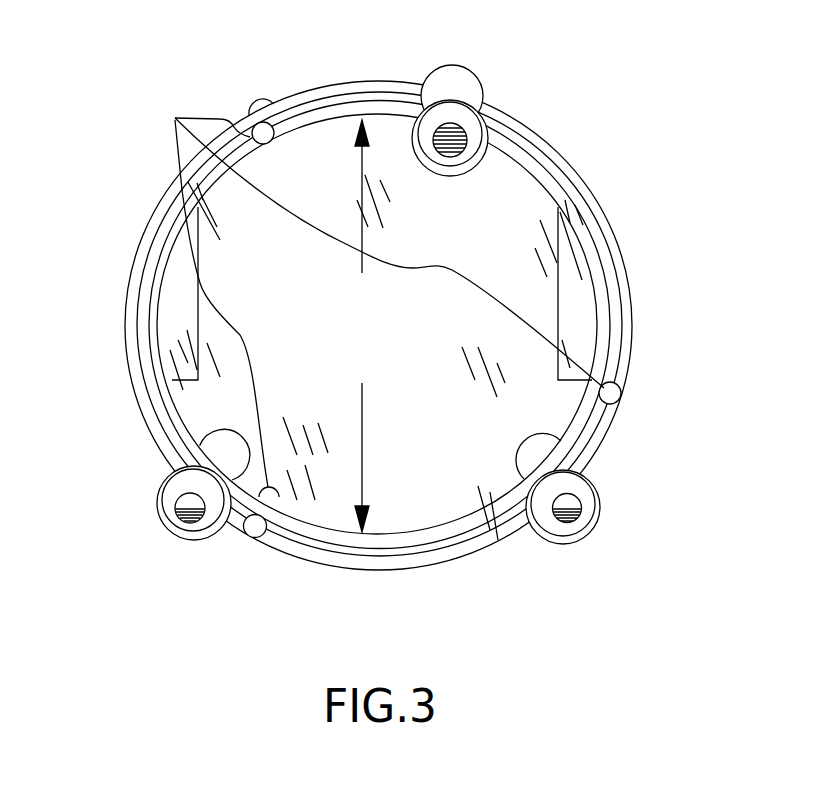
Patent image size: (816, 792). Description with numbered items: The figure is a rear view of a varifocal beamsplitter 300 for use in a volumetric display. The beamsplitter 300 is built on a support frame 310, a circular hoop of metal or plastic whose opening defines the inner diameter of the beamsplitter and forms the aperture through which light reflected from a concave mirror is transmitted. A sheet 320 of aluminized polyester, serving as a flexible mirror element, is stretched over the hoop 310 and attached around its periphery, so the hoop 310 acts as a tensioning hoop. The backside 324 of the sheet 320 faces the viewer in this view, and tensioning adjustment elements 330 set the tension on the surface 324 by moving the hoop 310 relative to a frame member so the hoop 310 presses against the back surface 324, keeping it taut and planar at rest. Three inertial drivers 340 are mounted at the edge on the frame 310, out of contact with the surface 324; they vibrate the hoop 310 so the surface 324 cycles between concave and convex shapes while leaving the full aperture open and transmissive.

The varifocal beamsplitter 300 is at (388, 331).
The support frame 310 is at (407, 556).
The sheet 320 is at (314, 557).
The backside 324 is at (305, 498).
The tensioning adjustment elements 330 is at (175, 118).
The inertial drivers 340 is at (476, 127).